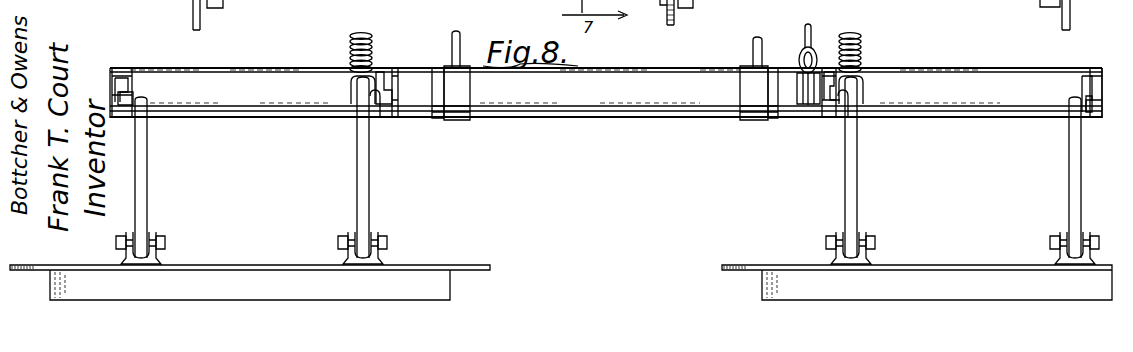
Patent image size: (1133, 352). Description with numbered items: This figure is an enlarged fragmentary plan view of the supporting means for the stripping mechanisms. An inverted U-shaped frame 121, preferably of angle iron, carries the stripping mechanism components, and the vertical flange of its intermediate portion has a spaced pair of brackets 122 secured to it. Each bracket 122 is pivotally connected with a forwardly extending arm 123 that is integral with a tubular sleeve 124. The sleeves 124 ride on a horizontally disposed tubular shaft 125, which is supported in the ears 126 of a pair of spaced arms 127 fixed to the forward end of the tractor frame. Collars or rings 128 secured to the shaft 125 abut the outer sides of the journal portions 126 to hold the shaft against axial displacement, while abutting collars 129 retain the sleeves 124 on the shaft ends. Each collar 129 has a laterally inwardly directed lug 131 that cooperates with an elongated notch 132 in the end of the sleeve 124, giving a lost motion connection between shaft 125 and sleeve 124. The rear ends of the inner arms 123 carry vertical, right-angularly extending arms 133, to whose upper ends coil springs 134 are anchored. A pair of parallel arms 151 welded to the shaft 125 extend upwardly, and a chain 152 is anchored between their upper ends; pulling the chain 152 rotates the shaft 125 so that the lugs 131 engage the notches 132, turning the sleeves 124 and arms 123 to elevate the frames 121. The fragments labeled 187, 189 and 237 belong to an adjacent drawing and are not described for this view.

The U-shaped inverted frame 121 is at (213, 262).
The bracket 122 is at (157, 257).
The arm 123 is at (147, 157).
The sleeve 124 is at (172, 118).
The tubular shaft 125 is at (565, 113).
The ear 126 is at (467, 120).
The arm 127 is at (454, 31).
The collar 128 is at (435, 118).
The collar 129 is at (113, 70).
The lug 131 is at (128, 78).
The notch 132 is at (130, 96).
The arm 133 is at (351, 96).
The coil spring 134 is at (350, 50).
The arm 151 is at (800, 88).
The chain 152 is at (805, 32).
The bolt (adjacent figure) 187 is at (616, 9).
The bolt rod (adjacent figure) 189 is at (190, 10).
The nut (adjacent figure) 237 is at (1090, 8).